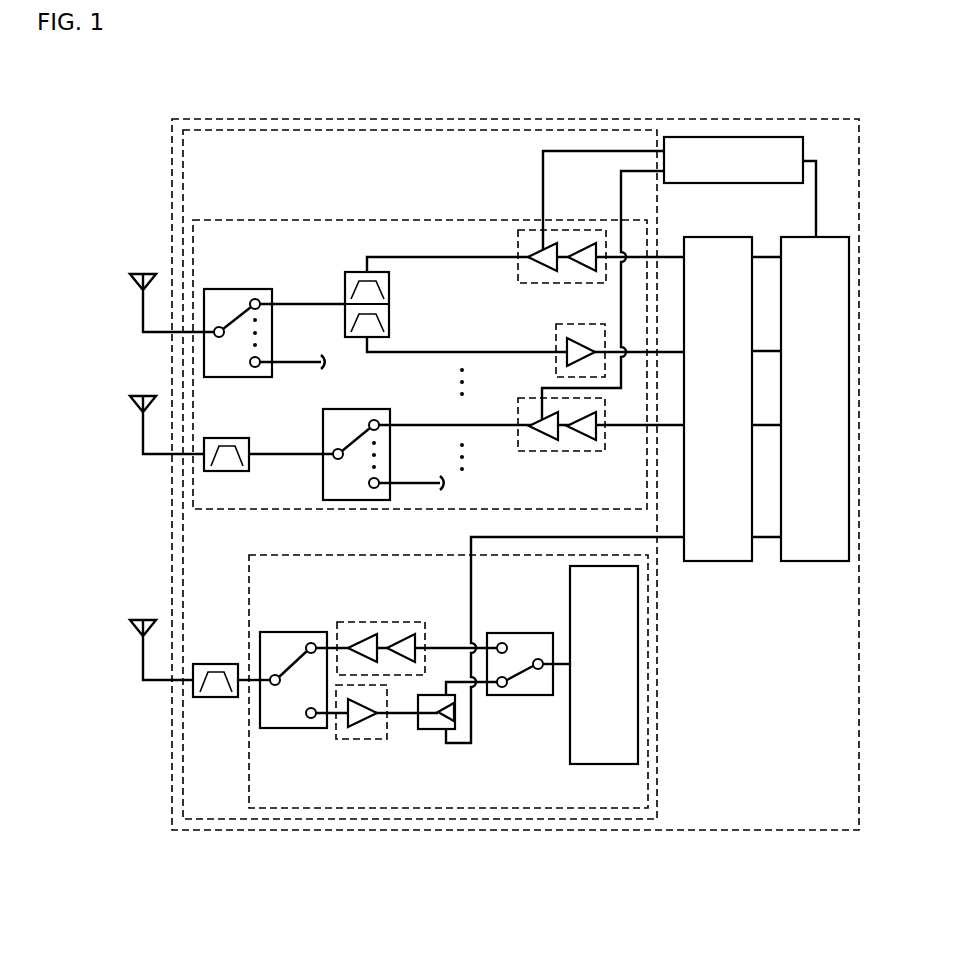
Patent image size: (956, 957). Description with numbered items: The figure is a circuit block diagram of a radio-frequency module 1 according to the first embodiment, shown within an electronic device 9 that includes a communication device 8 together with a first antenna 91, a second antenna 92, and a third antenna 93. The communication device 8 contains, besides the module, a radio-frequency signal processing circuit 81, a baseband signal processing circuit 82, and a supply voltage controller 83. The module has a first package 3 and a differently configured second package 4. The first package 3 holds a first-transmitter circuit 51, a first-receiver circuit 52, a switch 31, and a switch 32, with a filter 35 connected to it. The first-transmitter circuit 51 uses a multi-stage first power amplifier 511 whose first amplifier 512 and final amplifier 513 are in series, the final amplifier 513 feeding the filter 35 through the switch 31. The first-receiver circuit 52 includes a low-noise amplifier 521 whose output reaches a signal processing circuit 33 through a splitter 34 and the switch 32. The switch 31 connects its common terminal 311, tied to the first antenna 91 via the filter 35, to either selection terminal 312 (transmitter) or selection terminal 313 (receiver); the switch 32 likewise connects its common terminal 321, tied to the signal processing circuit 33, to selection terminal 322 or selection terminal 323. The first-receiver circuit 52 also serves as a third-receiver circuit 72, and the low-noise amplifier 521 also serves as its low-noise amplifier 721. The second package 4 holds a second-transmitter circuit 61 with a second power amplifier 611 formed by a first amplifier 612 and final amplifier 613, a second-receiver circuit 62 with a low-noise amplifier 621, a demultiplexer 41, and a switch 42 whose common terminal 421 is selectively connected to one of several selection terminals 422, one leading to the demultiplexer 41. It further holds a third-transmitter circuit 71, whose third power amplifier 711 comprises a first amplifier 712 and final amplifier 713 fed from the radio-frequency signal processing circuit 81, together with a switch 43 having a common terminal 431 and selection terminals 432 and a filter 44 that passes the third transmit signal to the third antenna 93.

The radio-frequency module 1 is at (621, 130).
The first package 3 is at (648, 763).
The second package 4 is at (330, 220).
The communication device 8 is at (859, 142).
The electronic device 9 is at (859, 79).
The switch 31 is at (349, 682).
The switch 32 is at (526, 666).
The signal processing circuit 33 is at (603, 764).
The splitter 34 is at (428, 730).
The filter 35 is at (213, 697).
The demultiplexer 41 is at (390, 288).
The switch 42 is at (273, 330).
The switch 43 is at (479, 437).
The filter 44 is at (230, 471).
The first-transmitter circuit 51 is at (384, 617).
The first-receiver circuit 52 is at (350, 744).
The second-transmitter circuit 61 is at (530, 225).
The second-receiver circuit 62 is at (556, 333).
The third-transmitter circuit 71 is at (557, 439).
The third-receiver circuit 72 is at (350, 744).
The radio-frequency signal processing circuit 81 is at (722, 237).
The baseband signal processing circuit 82 is at (788, 237).
The supply voltage controller 83 is at (797, 146).
The first antenna 91 is at (143, 620).
The second antenna 92 is at (143, 274).
The third antenna 93 is at (143, 396).
The common terminal 311 is at (270, 676).
The selection terminal 312 is at (308, 641).
The selection terminal 313 is at (305, 720).
The common terminal 321 is at (538, 670).
The selection terminal 322 is at (502, 642).
The selection terminal 323 is at (502, 688).
The common terminal 421 is at (219, 327).
The selection terminals 422 is at (260, 302).
The common terminal 431 is at (333, 458).
The selection terminals 432 is at (374, 419).
The first power amplifier 511 is at (398, 611).
The first amplifier 512 is at (418, 611).
The final amplifier 513 is at (366, 643).
The low-noise amplifier 521 is at (376, 751).
The second power amplifier 611 is at (525, 216).
The first amplifier 612 is at (585, 248).
The final amplifier 613 is at (537, 248).
The low-noise amplifier 621 is at (585, 328).
The third power amplifier 711 is at (569, 459).
The first amplifier 712 is at (591, 435).
The final amplifier 713 is at (548, 433).
The low-noise amplifier 721 is at (362, 725).